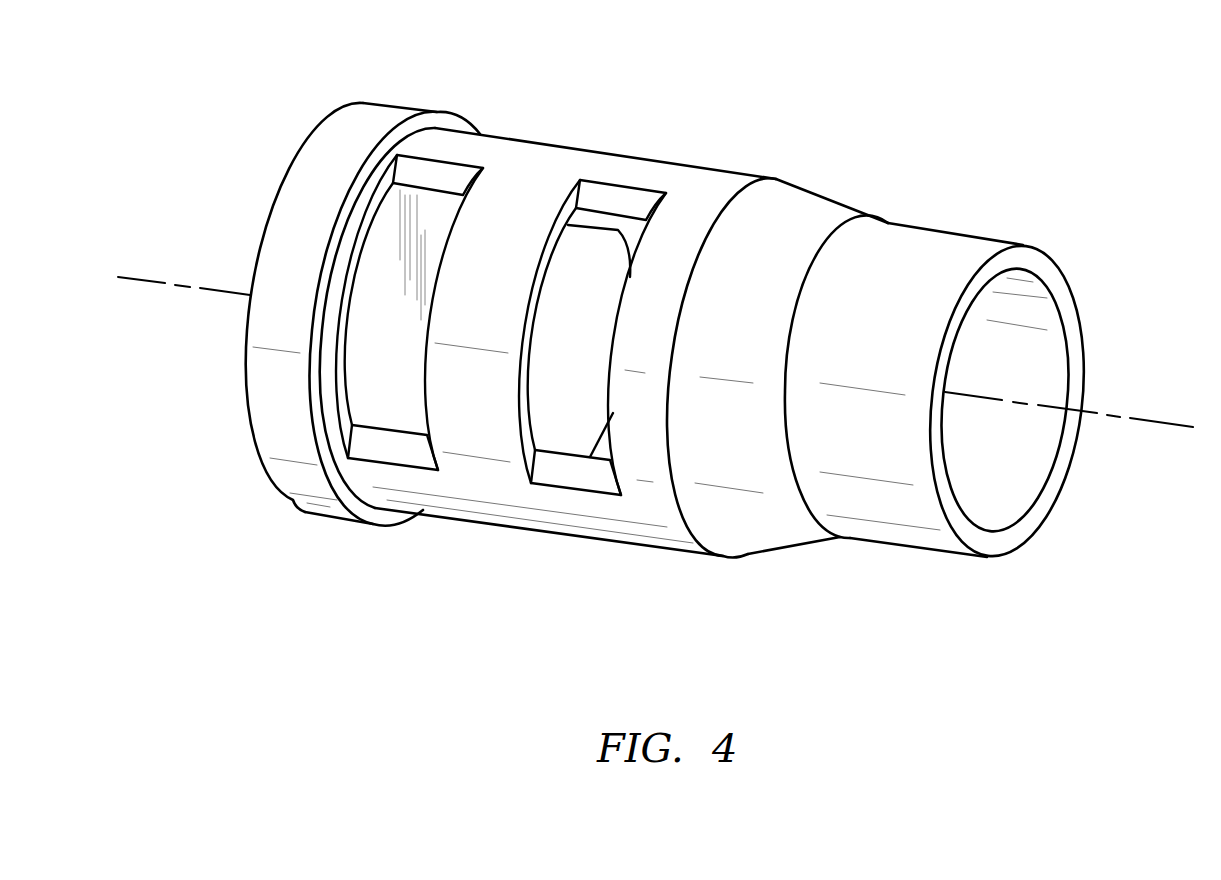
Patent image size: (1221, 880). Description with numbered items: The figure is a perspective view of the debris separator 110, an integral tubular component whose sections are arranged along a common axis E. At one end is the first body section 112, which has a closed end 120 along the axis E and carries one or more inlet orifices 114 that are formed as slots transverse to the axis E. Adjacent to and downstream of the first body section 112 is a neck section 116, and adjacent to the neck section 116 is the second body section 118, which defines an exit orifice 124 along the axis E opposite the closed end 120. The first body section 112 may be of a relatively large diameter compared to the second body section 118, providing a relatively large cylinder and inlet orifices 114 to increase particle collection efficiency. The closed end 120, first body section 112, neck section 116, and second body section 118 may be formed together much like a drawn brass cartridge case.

The debris separator 110 is at (693, 352).
The first body section 112 is at (536, 364).
The inlet orifices 114 is at (582, 246).
The neck section 116 is at (835, 600).
The second body section 118 is at (980, 448).
The closed end 120 is at (367, 130).
The exit orifice 124 is at (1006, 507).
The axis E is at (133, 273).